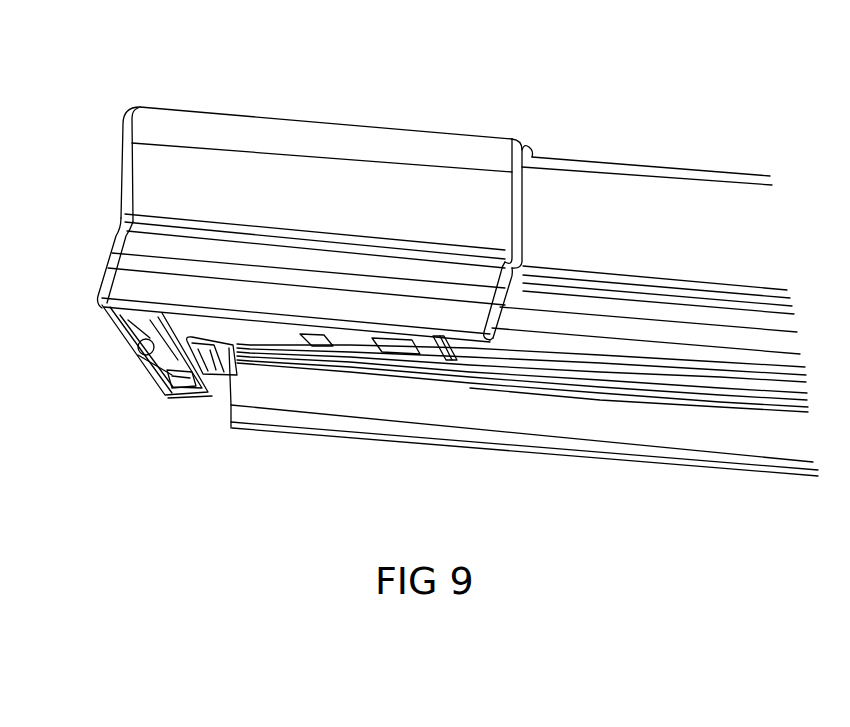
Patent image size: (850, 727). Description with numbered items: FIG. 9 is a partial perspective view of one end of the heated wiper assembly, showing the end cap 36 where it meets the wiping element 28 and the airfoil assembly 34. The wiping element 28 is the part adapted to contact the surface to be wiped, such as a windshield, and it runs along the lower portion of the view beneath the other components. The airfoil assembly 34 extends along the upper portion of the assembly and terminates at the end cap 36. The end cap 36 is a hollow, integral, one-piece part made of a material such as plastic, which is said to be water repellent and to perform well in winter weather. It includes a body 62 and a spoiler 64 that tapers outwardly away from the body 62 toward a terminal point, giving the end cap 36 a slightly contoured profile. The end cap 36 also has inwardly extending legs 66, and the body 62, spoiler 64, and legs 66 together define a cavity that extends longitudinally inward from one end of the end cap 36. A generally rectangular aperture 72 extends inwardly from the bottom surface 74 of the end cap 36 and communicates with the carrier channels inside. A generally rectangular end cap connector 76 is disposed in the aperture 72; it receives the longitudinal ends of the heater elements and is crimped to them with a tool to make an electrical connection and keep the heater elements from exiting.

The wiping element 28 is at (348, 440).
The airfoil assembly 34 is at (663, 168).
The end cap 36 is at (287, 116).
The body 62 is at (123, 248).
The spoiler 64 is at (150, 180).
The legs 66 is at (233, 330).
The aperture 72 is at (146, 361).
The bottom surface 74 is at (120, 330).
The end cap connector 76 is at (165, 390).